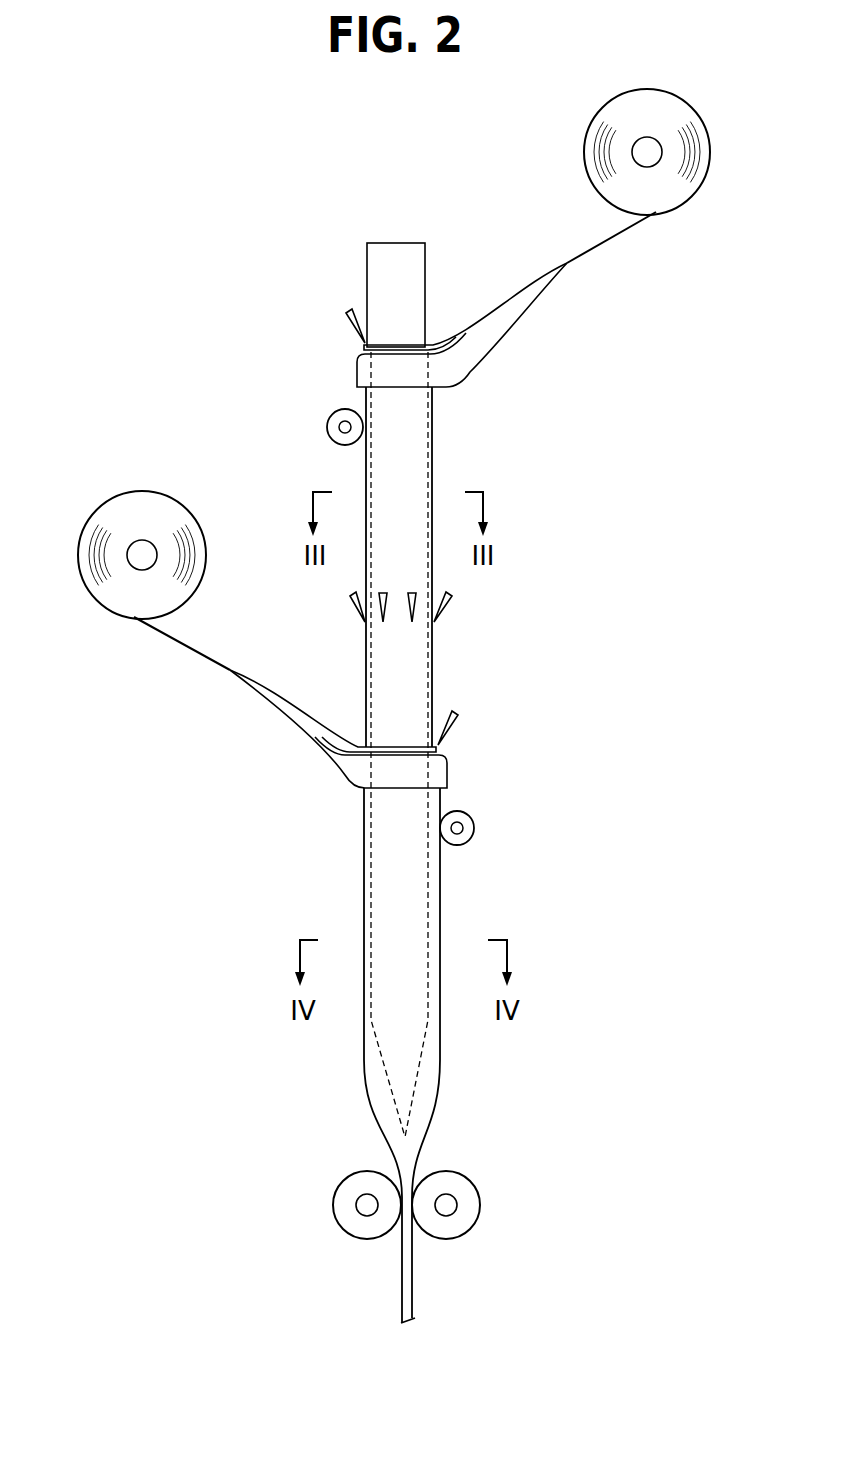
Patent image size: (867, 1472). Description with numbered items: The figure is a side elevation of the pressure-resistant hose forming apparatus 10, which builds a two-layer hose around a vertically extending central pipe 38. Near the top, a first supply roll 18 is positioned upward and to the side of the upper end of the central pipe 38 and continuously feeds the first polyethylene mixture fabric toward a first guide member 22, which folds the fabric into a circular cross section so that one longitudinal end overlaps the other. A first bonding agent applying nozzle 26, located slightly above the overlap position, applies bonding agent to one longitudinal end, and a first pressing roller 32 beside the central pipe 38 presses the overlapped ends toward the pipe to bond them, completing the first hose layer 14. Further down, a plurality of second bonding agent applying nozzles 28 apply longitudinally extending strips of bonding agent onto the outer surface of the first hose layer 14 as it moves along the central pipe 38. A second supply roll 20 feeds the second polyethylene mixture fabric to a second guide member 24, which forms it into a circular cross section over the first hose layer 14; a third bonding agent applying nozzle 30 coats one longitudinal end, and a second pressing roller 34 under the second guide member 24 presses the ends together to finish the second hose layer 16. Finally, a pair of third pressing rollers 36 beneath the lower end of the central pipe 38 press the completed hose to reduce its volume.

The pressure-resistant hose forming apparatus 10 is at (185, 331).
The first hose layer 14 is at (412, 452).
The second hose layer 16 is at (414, 892).
The first supply roll 18 is at (590, 143).
The second supply roll 20 is at (110, 597).
The first guide member 22 is at (490, 318).
The second guide member 24 is at (325, 737).
The first bonding agent applying nozzle 26 is at (343, 327).
The second bonding agent applying nozzles 28 is at (383, 608).
The third bonding agent applying nozzle 30 is at (460, 723).
The first pressing roller 32 is at (332, 423).
The second pressing roller 34 is at (468, 815).
The third pressing rollers 36 is at (465, 1185).
The central pipe 38 is at (390, 248).